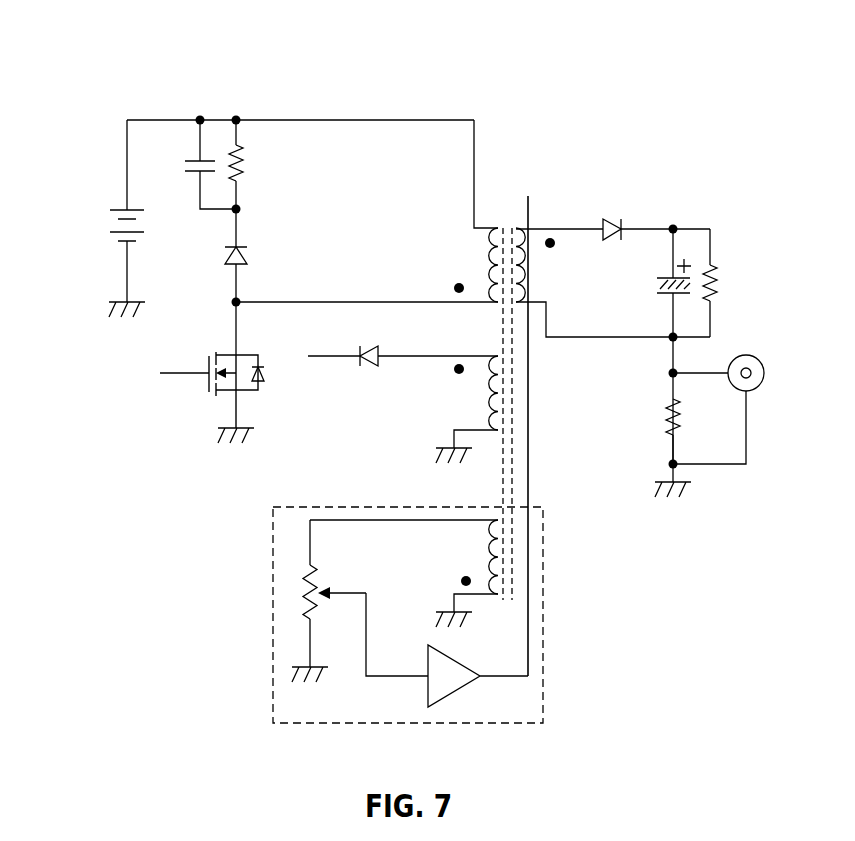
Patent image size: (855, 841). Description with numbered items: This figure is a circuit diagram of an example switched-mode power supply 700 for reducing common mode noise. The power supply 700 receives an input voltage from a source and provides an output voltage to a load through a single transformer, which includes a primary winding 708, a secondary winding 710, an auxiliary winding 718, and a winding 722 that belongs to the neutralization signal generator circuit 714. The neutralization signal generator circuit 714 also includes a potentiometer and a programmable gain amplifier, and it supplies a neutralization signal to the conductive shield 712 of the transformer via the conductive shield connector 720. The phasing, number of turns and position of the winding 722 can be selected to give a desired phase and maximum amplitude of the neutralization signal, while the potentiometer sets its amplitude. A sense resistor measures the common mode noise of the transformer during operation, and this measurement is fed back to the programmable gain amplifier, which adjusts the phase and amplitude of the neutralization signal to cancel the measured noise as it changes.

The power supply 700 is at (122, 42).
The primary winding 708 is at (490, 266).
The secondary winding 710 is at (528, 272).
The conductive shield 712 is at (530, 200).
The neutralization signal generator circuit 714 is at (543, 618).
The auxiliary winding 718 is at (490, 393).
The conductive shield connector 720 is at (530, 424).
The winding 722 is at (498, 568).